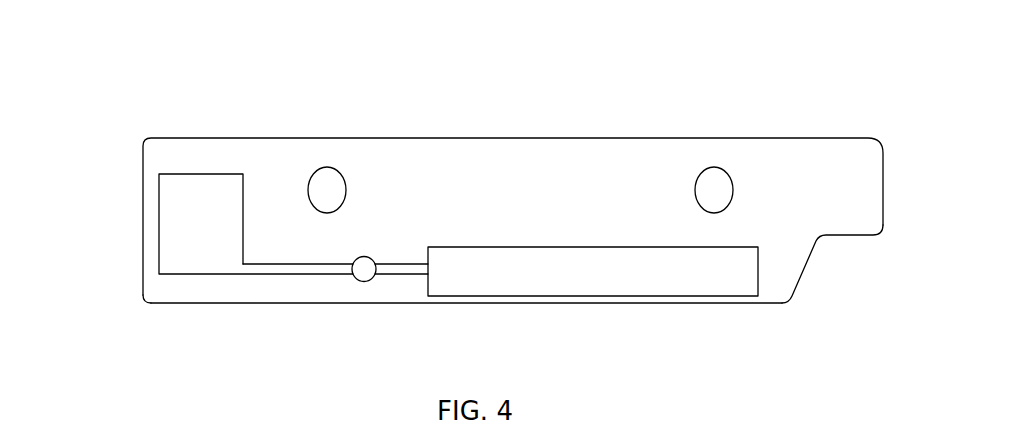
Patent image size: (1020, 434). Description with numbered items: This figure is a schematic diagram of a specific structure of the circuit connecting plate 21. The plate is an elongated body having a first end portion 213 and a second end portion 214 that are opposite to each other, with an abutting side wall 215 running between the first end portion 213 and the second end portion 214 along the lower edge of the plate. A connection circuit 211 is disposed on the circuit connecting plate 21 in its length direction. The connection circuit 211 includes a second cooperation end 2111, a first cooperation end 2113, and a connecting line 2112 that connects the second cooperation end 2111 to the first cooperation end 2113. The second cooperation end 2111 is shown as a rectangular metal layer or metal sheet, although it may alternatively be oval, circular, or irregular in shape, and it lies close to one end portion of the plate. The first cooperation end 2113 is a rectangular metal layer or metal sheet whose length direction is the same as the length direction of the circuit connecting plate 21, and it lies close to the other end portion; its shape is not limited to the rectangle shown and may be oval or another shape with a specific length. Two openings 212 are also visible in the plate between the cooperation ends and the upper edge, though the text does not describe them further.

The circuit connecting plate 21 is at (813, 172).
The connection circuit 211 is at (495, 71).
The second cooperation end 2111 is at (197, 192).
The connecting line 2112 is at (338, 262).
The first cooperation end 2113 is at (460, 257).
The mounting holes 212 is at (715, 183).
The first end portion 213 is at (798, 272).
The second end portion 214 is at (143, 237).
The abutting side wall 215 is at (583, 303).